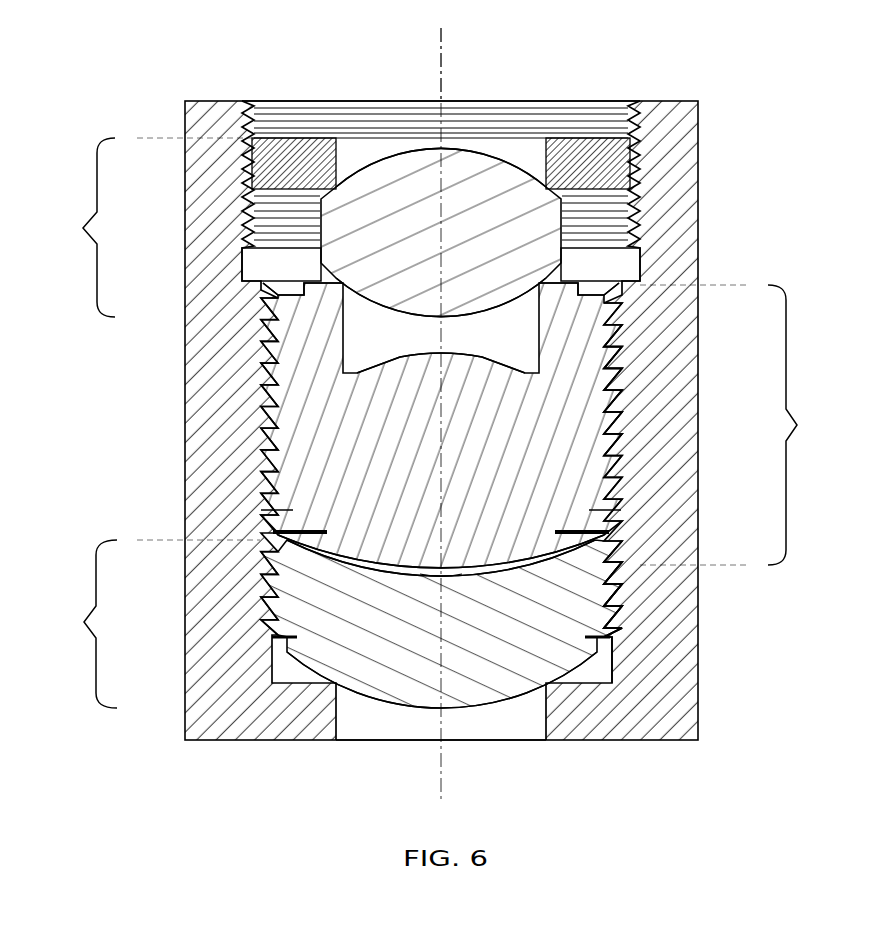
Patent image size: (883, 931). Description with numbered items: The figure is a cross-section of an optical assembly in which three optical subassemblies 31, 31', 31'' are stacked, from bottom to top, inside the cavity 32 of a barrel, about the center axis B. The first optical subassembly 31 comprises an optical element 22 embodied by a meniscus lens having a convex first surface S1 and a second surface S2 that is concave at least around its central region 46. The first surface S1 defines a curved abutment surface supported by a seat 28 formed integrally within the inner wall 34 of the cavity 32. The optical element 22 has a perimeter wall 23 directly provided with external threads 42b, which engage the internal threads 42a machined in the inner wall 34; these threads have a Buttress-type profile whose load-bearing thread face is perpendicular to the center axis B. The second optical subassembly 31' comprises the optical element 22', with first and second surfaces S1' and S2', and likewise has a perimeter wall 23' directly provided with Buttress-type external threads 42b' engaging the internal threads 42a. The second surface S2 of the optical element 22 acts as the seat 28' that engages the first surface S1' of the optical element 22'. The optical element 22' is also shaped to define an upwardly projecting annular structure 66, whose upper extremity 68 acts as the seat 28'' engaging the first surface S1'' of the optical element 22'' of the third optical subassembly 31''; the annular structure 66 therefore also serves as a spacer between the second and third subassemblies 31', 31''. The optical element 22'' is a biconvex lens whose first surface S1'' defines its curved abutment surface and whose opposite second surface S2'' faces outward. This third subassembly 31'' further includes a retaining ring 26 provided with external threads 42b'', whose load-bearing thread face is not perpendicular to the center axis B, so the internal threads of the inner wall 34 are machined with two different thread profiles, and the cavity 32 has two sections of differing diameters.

The optical element 22 is at (441, 662).
The optical element 22' is at (373, 425).
The optical element 22'' is at (441, 182).
The perimeter wall 23 is at (603, 660).
The perimeter wall 23' is at (587, 418).
The retaining ring 26 is at (318, 160).
The seat 28 is at (437, 714).
The seat 28' is at (505, 530).
The seat 28'' is at (509, 277).
The first optical subassembly 31 is at (87, 624).
The second optical subassembly 31' is at (803, 425).
The third optical subassembly 31'' is at (80, 227).
The cavity 32 is at (405, 725).
The inner wall 34 is at (622, 98).
The internal threads 42a is at (620, 597).
The external threads 42b is at (682, 633).
The external threads 42b' is at (685, 357).
The external threads 42b'' is at (513, 145).
The central region 46 is at (441, 578).
The upwardly projecting annular structure 66 is at (262, 350).
The upper extremity 68 is at (308, 280).
The center axis B is at (444, 48).
The first surface S1 is at (442, 714).
The second surface S2 is at (441, 582).
The first surface S1' is at (364, 537).
The second surface S2' is at (326, 371).
The first surface S1'' is at (441, 311).
The second surface S2'' is at (441, 124).